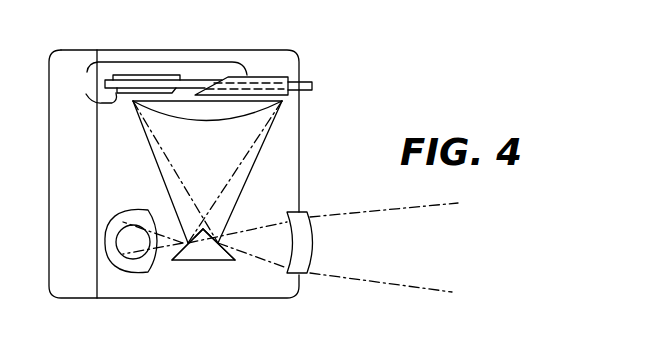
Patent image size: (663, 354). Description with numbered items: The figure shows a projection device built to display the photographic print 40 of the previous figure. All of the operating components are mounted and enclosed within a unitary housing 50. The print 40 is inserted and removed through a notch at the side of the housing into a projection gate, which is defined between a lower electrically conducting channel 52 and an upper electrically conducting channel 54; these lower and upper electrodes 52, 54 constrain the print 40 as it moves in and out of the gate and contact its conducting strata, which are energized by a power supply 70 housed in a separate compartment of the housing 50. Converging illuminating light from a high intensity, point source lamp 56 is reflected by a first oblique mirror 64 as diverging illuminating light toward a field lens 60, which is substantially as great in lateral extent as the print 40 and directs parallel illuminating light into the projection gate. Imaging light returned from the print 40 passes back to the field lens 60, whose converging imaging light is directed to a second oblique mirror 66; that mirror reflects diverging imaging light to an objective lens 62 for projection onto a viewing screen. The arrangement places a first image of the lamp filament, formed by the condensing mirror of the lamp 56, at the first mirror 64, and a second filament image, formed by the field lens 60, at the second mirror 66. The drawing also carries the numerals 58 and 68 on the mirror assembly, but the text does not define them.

The photographic print 40 is at (318, 83).
The unitary housing 50 is at (298, 147).
The lower electrically conducting channel 52 is at (149, 79).
The upper electrically conducting channel 54 is at (253, 77).
The point source lamp 56 is at (147, 210).
The prism 58 is at (168, 262).
The field lens 60 is at (230, 122).
The objective lens 62 is at (313, 260).
The first oblique mirror 64 is at (188, 261).
The second oblique mirror 66 is at (217, 261).
The reflective surface 68 is at (173, 258).
The power supply 70 is at (83, 156).